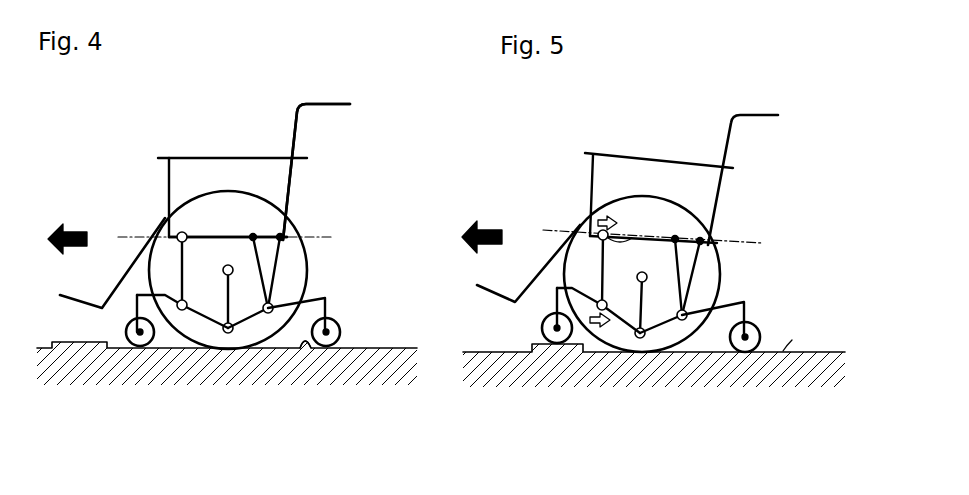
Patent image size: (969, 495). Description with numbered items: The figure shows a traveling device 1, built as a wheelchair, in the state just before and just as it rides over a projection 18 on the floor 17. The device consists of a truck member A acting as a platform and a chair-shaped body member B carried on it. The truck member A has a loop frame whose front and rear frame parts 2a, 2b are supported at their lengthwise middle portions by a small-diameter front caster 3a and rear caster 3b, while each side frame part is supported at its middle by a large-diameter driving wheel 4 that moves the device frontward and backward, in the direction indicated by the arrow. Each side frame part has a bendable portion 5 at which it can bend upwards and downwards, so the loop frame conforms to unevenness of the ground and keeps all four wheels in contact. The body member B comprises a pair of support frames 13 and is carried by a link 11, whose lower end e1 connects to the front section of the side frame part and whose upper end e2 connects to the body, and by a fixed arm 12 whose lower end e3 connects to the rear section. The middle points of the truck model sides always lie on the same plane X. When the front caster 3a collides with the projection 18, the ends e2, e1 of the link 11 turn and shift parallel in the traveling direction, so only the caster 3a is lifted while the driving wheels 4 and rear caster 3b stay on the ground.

In FIG. 4, the traveling device 1 is at (130, 141).
In FIG. 4, the front frame part 2a is at (168, 306).
In FIG. 4, the rear frame part 2b is at (305, 302).
In FIG. 4, the front caster 3a is at (135, 350).
In FIG. 5, the front caster 3a is at (541, 328).
In FIG. 4, the rear caster 3b is at (330, 344).
In FIG. 4, the driving wheel 4 is at (300, 234).
In FIG. 4, the bendable portion 5 is at (222, 338).
In FIG. 4, the link 11 is at (180, 283).
In FIG. 4, the fixed arm 12 is at (275, 265).
In FIG. 4, the support frame 13 is at (215, 236).
In FIG. 4, the floor 17 is at (307, 346).
In FIG. 5, the floor 17 is at (783, 351).
In FIG. 4, the projection 18 is at (72, 352).
In FIG. 5, the projection 18 is at (557, 355).
In FIG. 4, the truck member A is at (335, 275).
In FIG. 4, the body member B is at (335, 144).
In FIG. 4, the plane X is at (242, 238).
In FIG. 5, the plane X is at (668, 247).
In FIG. 4, the lower end of link e1 is at (180, 336).
In FIG. 5, the lower end of link e1 is at (628, 336).
In FIG. 4, the upper end of link e2 is at (182, 232).
In FIG. 5, the upper end of link e2 is at (632, 237).
In FIG. 4, the lower end of fixed arm e3 is at (266, 313).
In FIG. 5, the lower end of fixed arm e3 is at (686, 320).